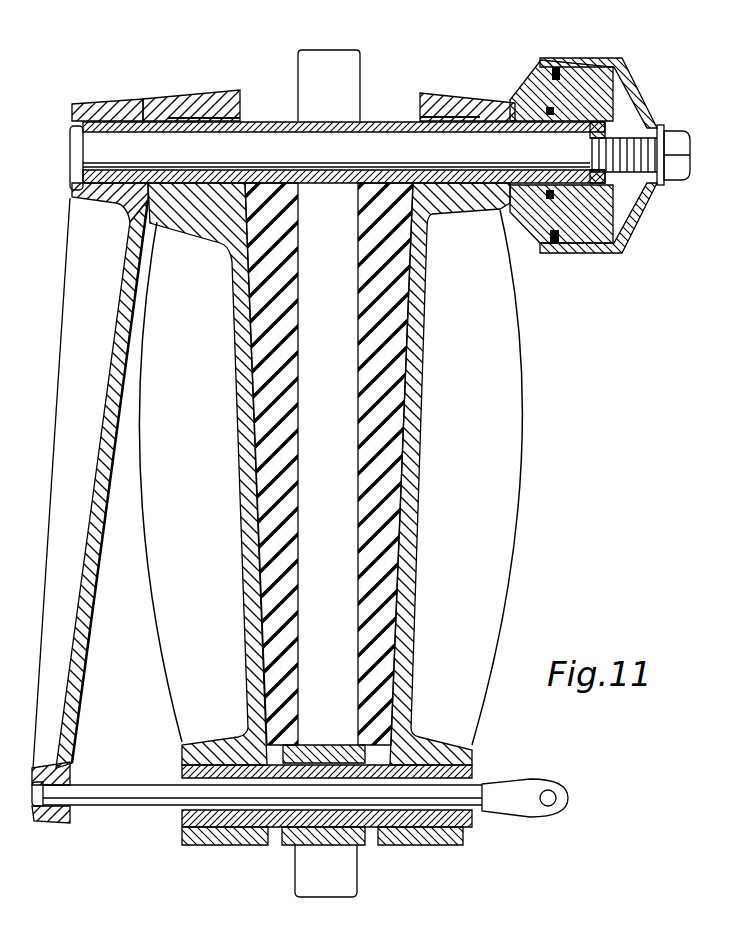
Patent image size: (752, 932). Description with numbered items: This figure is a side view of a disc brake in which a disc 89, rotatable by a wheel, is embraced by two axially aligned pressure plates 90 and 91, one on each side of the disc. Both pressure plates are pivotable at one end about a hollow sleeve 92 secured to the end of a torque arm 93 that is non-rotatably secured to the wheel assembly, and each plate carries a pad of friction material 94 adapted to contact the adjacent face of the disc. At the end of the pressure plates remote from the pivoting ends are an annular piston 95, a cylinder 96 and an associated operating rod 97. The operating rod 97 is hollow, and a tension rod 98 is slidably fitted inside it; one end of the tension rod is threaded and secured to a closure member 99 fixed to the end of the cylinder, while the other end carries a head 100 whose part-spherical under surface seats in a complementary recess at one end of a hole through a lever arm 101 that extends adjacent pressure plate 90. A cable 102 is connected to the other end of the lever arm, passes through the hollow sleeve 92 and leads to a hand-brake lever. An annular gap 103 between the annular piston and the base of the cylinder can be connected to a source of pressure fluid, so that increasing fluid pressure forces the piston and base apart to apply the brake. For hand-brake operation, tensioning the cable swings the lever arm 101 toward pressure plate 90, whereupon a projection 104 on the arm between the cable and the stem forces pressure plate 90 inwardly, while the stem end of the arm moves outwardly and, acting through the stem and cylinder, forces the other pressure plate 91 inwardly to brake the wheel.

The disc 89 is at (352, 66).
The pressure plate 90 is at (240, 447).
The pressure plate 91 is at (416, 447).
The hollow sleeve 92 is at (257, 817).
The torque arm 93 is at (355, 835).
The pad of friction material 94 is at (370, 357).
The annular piston 95 is at (581, 252).
The cylinder 96 is at (560, 254).
The operating rod 97 is at (382, 128).
The tension rod 98 is at (270, 140).
The closure member 99 is at (633, 88).
The head 100 is at (72, 128).
The lever arm 101 is at (86, 629).
The cable 102 is at (133, 790).
The annular gap 103 is at (540, 74).
The projection 104 is at (110, 218).